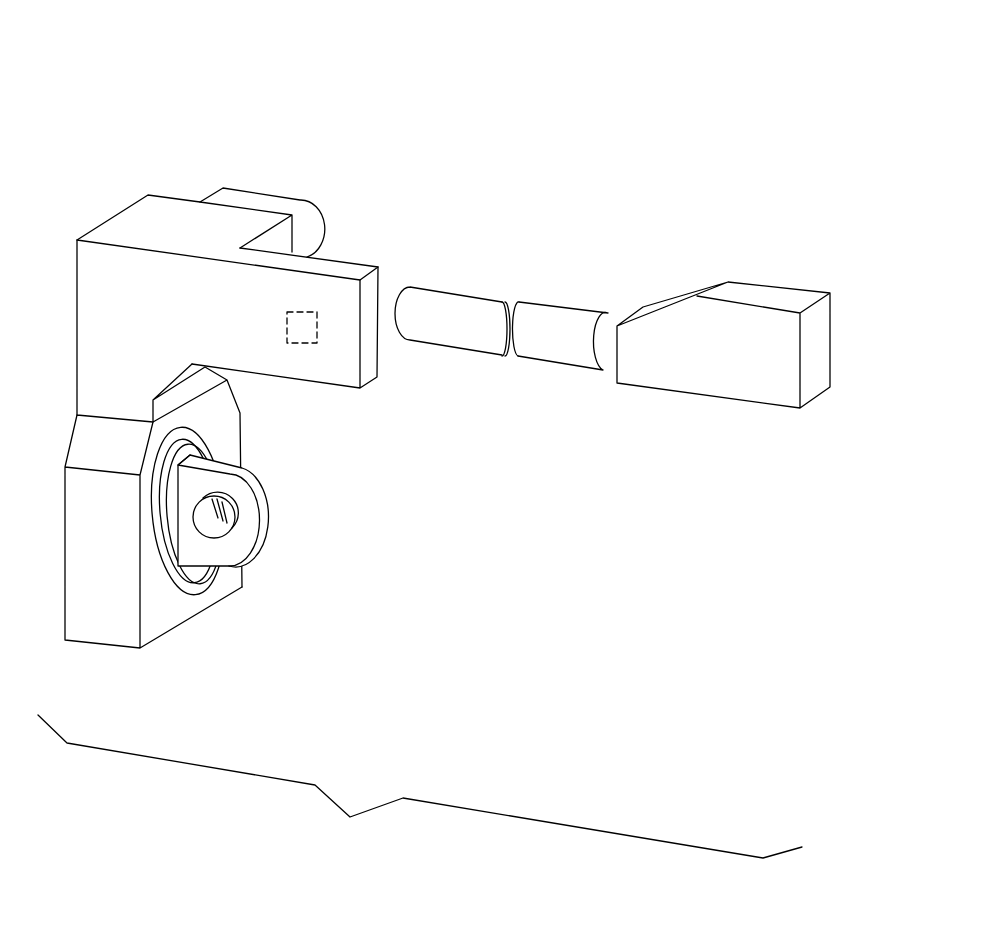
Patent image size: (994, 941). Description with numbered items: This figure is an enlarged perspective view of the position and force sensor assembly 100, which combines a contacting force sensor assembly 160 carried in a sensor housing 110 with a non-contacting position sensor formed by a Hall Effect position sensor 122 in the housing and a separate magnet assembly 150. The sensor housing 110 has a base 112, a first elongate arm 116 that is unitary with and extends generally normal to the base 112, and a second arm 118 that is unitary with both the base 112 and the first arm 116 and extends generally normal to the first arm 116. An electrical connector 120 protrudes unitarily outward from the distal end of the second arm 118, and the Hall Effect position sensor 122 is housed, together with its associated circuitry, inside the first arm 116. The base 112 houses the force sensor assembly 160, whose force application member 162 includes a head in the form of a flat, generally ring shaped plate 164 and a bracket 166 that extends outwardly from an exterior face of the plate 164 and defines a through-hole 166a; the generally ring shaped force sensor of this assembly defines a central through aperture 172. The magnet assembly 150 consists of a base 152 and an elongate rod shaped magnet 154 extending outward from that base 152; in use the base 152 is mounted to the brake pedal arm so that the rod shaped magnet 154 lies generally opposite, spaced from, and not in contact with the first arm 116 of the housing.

The position and force sensor assembly 100 is at (457, 165).
The sensor housing 110 is at (99, 203).
The base 112 is at (115, 625).
The first elongate arm 116 is at (168, 278).
The second arm 118 is at (187, 228).
The electrical connector 120 is at (255, 205).
The Hall Effect position sensor 122 is at (302, 323).
The magnet assembly 150 is at (667, 302).
The base 152 is at (692, 358).
The rod shaped magnet 154 is at (553, 323).
The force sensor assembly 160 is at (302, 513).
The force application member 162 is at (262, 485).
The ring shaped plate 164 is at (170, 545).
The bracket 166 is at (243, 527).
The through-hole 166a is at (217, 533).
The central through aperture 172 is at (198, 437).